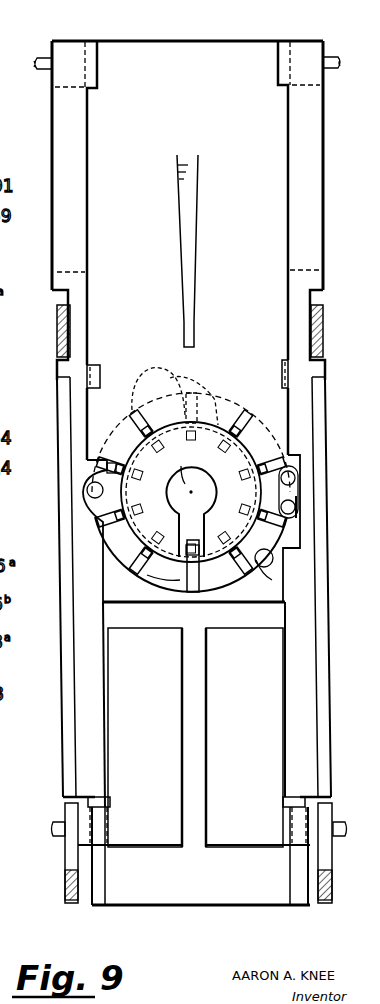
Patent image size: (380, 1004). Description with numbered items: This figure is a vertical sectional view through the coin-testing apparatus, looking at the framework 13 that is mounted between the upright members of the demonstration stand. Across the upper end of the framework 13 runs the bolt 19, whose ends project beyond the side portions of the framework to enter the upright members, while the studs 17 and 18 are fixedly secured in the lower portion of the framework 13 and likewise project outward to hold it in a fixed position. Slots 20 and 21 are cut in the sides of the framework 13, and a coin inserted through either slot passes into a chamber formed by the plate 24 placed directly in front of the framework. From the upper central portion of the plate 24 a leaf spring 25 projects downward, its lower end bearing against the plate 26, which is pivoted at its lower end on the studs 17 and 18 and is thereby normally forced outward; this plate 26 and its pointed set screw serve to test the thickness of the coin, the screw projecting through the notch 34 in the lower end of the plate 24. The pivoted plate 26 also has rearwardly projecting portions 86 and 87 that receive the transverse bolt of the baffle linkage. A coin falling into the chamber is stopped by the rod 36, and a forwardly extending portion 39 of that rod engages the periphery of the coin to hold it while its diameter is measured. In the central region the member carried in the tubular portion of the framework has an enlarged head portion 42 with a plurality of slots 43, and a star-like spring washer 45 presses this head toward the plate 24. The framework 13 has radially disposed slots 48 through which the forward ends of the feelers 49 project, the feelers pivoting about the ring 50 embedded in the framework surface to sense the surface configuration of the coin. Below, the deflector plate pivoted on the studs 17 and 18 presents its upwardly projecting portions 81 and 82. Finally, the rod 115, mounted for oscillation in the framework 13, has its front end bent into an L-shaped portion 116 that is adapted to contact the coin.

The framework 13 is at (305, 41).
The stud 17 is at (53, 828).
The stud 18 is at (345, 828).
The bolt 19 is at (40, 60).
The slot 20 is at (62, 170).
The slot 21 is at (305, 182).
The plate 24 is at (188, 200).
The leaf spring 25 is at (194, 262).
The plate 26 is at (64, 878).
The notch 34 is at (183, 470).
The rod 36 is at (266, 568).
The portion of rod 39 is at (87, 491).
The enlarged head portion 42 is at (212, 398).
The slots 43 is at (191, 492).
The star-like spring washer 45 is at (128, 546).
The radially disposed slots 48 is at (168, 380).
The feelers 49 is at (172, 398).
The ring 50 is at (258, 540).
The upwardly projecting portion 81 is at (145, 737).
The upwardly projecting portion 82 is at (244, 737).
The rearwardly projecting portion 86 is at (57, 318).
The rearwardly projecting portion 87 is at (325, 322).
The rod 115 is at (296, 508).
The L-shaped portion 116 is at (296, 478).